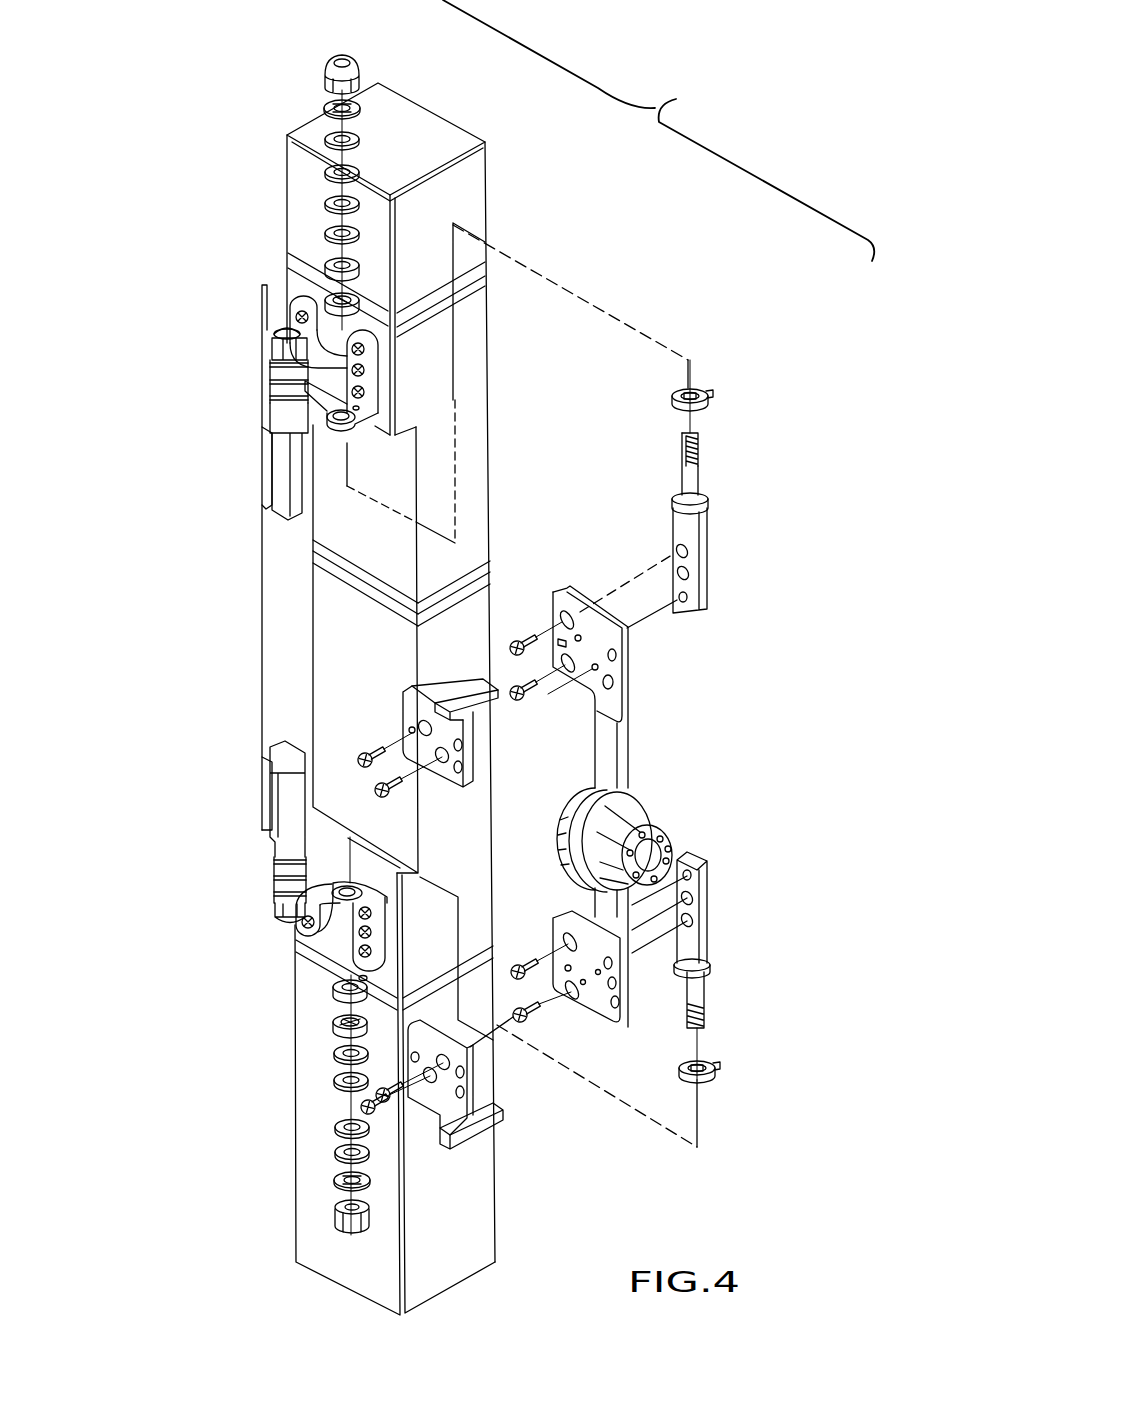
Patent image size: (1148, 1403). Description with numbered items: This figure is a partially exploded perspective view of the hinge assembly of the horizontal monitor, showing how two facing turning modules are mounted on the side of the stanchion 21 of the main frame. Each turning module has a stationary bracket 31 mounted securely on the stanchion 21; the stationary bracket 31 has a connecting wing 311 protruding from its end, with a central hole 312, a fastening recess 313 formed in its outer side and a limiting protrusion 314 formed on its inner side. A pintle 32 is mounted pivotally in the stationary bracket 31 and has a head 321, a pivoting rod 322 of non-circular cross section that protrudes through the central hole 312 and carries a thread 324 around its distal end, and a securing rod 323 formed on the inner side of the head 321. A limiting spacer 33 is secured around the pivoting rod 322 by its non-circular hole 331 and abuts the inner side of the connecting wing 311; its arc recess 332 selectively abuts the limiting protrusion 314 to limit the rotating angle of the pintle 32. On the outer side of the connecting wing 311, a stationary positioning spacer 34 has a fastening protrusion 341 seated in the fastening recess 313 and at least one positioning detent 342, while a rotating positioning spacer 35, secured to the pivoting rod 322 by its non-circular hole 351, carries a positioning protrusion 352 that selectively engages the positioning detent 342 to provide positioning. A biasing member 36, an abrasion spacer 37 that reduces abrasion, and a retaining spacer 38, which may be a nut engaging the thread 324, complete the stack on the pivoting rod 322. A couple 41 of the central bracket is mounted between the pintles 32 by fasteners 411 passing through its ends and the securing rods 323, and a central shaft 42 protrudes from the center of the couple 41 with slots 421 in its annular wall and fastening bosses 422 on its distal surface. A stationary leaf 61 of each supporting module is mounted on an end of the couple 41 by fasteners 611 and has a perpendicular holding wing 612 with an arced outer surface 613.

The stanchion 21 is at (422, 118).
The stationary bracket 31 is at (372, 633).
The connecting wing 311 is at (312, 443).
The central hole 312 is at (342, 426).
The fastening recess 313 is at (348, 408).
The limiting protrusion 314 is at (340, 893).
The pintle 32 is at (713, 720).
The head 321 is at (670, 505).
The pivoting rod 322 is at (700, 483).
The securing rod 323 is at (722, 513).
The thread 324 is at (700, 450).
The limiting spacer 33 is at (688, 713).
The non-circular hole 331 is at (684, 391).
The arc recess 332 is at (702, 390).
The stationary positioning spacer 34 is at (355, 617).
The fastening protrusion 341 is at (362, 978).
The positioning detent 342 is at (330, 295).
The rotating positioning spacer 35 is at (356, 662).
The non-circular hole 351 is at (322, 258).
The positioning protrusion 352 is at (335, 1015).
The biasing member 36 is at (305, 253).
The abrasion spacer 37 is at (327, 108).
The retaining spacer 38 is at (355, 57).
The couple 41 is at (645, 808).
The fasteners 411 is at (516, 640).
The central shaft 42 is at (682, 834).
The slots 421 is at (624, 846).
The fastening bosses 422 is at (671, 849).
The stationary leaf 61 is at (464, 885).
The fasteners 611 is at (393, 790).
The holding wing 612 is at (469, 885).
The arced outer surface 613 is at (470, 692).